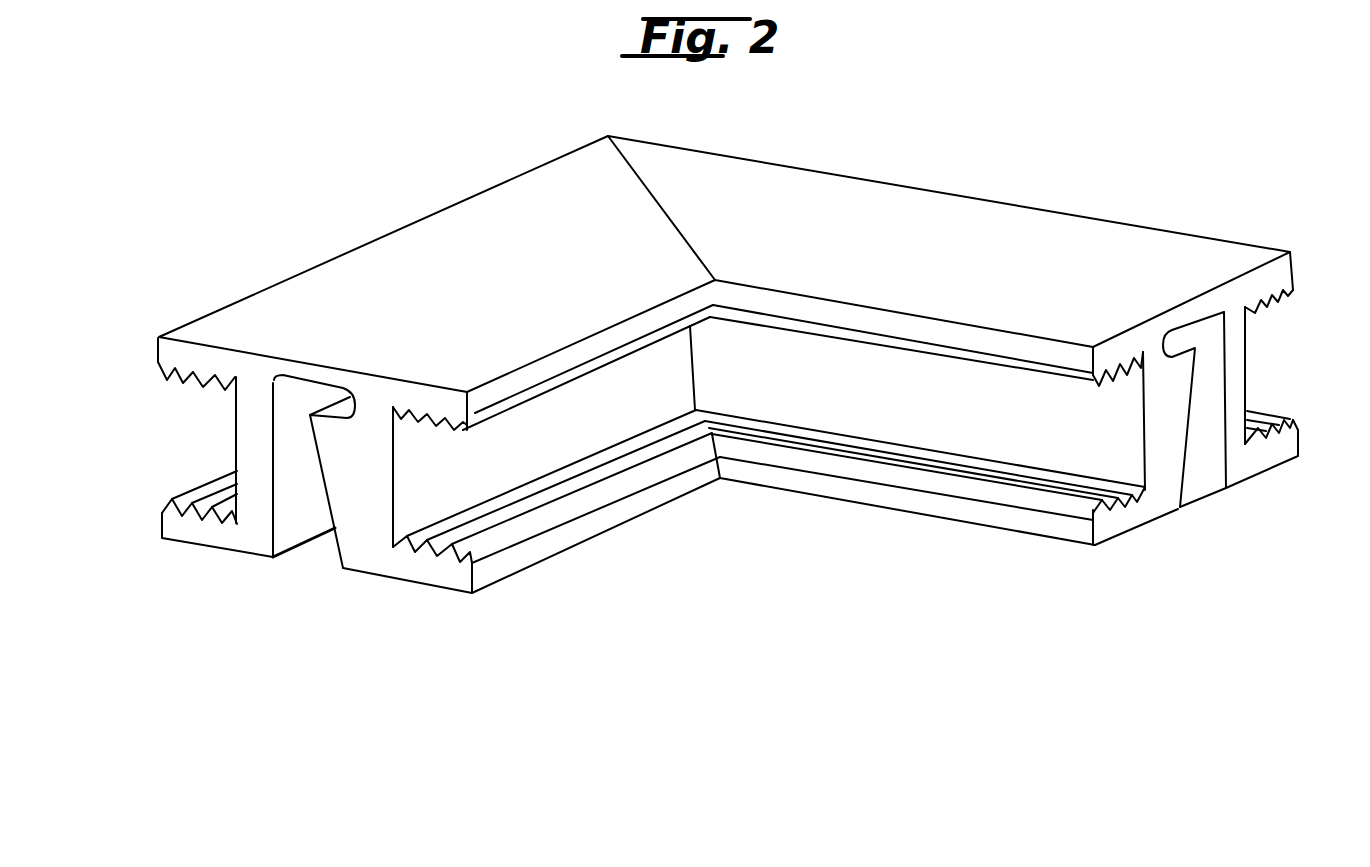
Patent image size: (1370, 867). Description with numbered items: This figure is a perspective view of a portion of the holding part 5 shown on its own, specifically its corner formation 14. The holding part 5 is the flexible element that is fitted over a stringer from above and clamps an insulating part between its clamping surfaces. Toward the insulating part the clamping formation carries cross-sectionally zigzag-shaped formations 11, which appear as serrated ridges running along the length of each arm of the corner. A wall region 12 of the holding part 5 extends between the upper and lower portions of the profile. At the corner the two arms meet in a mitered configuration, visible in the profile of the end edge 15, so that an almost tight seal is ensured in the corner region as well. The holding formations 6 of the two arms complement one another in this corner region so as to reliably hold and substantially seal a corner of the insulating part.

The holding part 5 is at (400, 255).
The holding formations 6 is at (447, 493).
The zigzag-shaped formations 11 is at (190, 370).
The wall region 12 is at (237, 448).
The corner formation 14 is at (1002, 142).
The end edge 15 is at (652, 197).